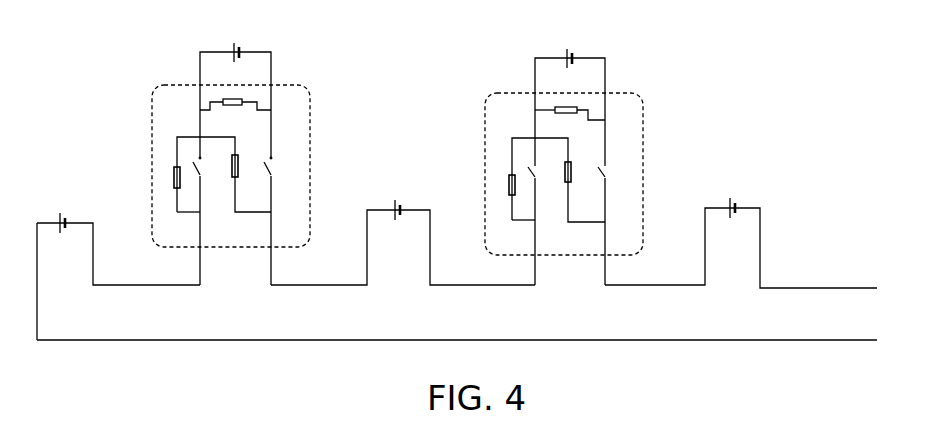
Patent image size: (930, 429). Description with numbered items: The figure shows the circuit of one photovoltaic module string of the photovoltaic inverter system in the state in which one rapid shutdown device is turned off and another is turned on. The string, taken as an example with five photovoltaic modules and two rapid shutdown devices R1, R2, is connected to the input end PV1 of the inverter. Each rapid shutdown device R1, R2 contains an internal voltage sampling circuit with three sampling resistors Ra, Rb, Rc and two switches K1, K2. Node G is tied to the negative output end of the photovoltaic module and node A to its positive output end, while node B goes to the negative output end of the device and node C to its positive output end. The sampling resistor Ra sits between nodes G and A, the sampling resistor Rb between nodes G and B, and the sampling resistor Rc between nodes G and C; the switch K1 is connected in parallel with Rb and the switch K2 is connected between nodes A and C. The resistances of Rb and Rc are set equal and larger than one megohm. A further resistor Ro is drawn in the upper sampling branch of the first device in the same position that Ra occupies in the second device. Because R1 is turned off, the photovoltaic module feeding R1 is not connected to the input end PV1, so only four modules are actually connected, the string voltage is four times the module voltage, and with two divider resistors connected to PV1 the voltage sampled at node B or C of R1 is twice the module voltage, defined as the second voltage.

The rapid shutdown device R1 is at (251, 156).
The rapid shutdown device R2 is at (584, 159).
The input end of the inverter PV1 is at (475, 260).
The resistor Ro is at (235, 111).
The sampling resistor Ra is at (570, 119).
The sampling resistor Rb is at (167, 177).
The sampling resistor Rc is at (224, 166).
The switch K1 is at (204, 176).
The switch K2 is at (275, 176).